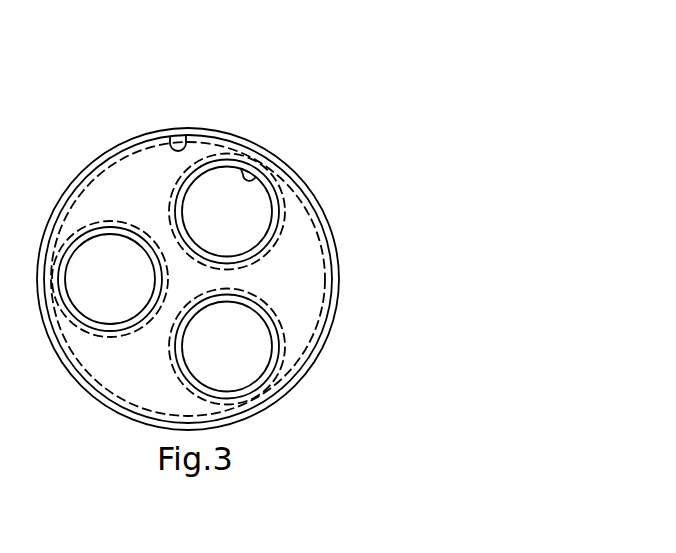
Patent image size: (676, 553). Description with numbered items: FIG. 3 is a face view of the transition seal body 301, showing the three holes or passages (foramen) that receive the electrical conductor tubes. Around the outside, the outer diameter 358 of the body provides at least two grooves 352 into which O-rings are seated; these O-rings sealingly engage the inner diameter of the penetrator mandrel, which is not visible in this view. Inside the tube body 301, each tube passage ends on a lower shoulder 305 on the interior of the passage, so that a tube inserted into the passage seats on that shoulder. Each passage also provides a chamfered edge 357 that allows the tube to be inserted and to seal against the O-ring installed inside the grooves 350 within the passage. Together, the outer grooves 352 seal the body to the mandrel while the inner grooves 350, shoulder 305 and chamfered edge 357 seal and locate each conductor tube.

The transition seal body 301 is at (302, 258).
The lower shoulder 305 is at (241, 168).
The grooves 350 is at (267, 313).
The grooves 352 is at (188, 142).
The chamfered edge 357 is at (279, 211).
The outer diameter 358 is at (295, 386).